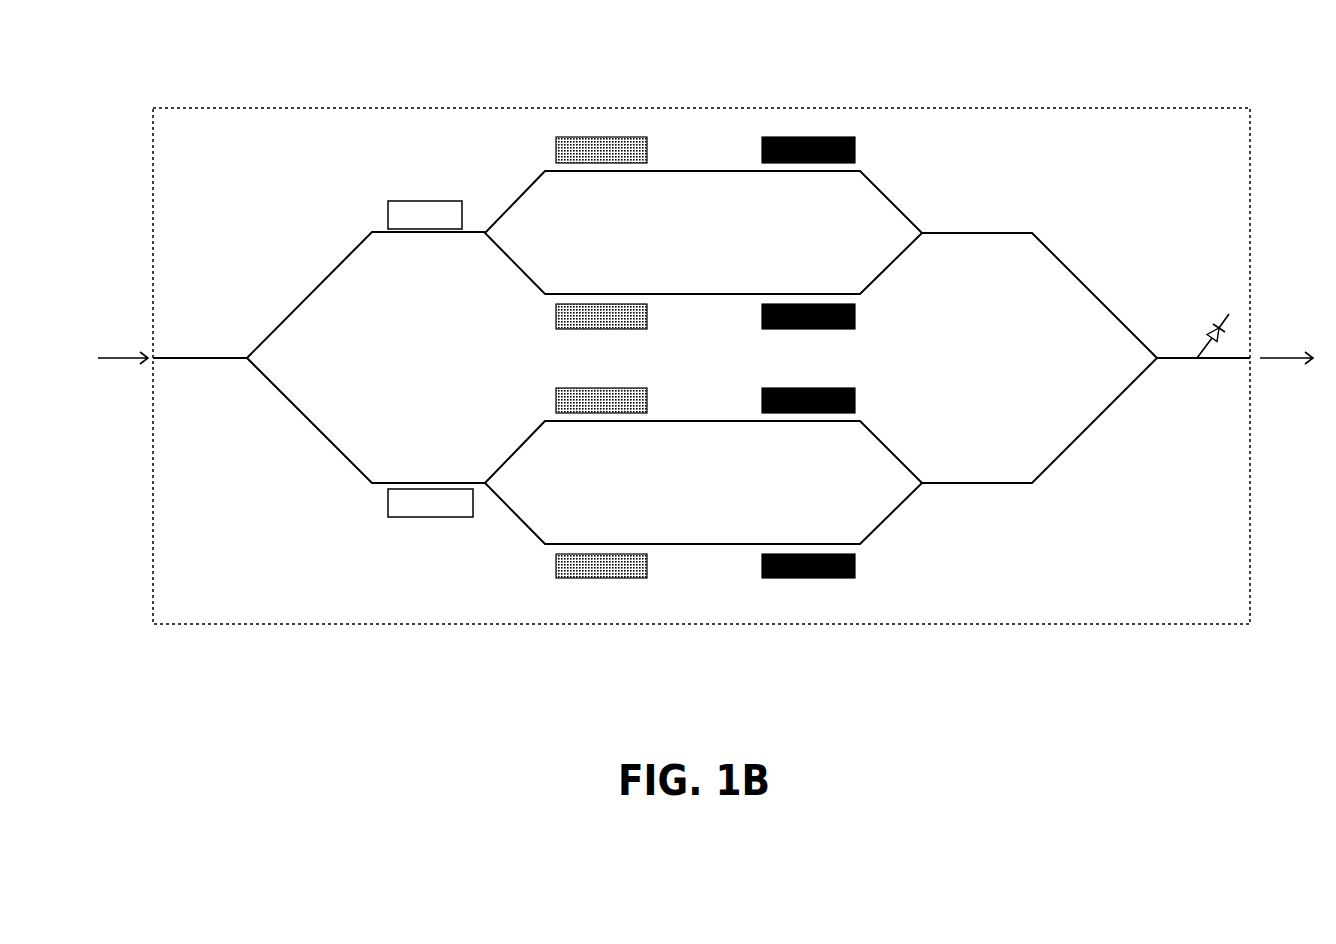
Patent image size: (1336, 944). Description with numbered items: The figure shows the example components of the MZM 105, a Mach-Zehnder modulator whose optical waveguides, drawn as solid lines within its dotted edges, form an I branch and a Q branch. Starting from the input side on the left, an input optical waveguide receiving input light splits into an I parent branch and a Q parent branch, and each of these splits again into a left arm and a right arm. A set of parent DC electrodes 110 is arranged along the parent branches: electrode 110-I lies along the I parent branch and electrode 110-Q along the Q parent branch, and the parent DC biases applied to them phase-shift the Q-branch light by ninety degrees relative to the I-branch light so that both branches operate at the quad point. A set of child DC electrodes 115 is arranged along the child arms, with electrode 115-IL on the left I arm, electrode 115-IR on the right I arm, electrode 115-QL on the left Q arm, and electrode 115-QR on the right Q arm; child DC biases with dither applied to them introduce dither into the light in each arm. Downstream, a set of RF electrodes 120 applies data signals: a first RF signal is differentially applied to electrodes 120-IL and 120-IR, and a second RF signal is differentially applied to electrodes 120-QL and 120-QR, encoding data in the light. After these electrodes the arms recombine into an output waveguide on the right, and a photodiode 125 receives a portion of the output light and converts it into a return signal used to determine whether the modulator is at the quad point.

The MZM 105 is at (244, 69).
The parent DC electrodes 110 is at (430, 359).
The electrode 110-I is at (425, 215).
The electrode 110-Q is at (430, 503).
The child DC electrodes 115 is at (601, 359).
The electrode 115-IL is at (601, 151).
The electrode 115-IR is at (601, 317).
The electrode 115-QL is at (601, 401).
The electrode 115-QR is at (601, 567).
The RF electrodes 120 is at (808, 359).
The electrode 120-IL is at (808, 151).
The electrode 120-IR is at (808, 317).
The electrode 120-QL is at (808, 401).
The electrode 120-QR is at (808, 567).
The photodiode 125 is at (1209, 352).